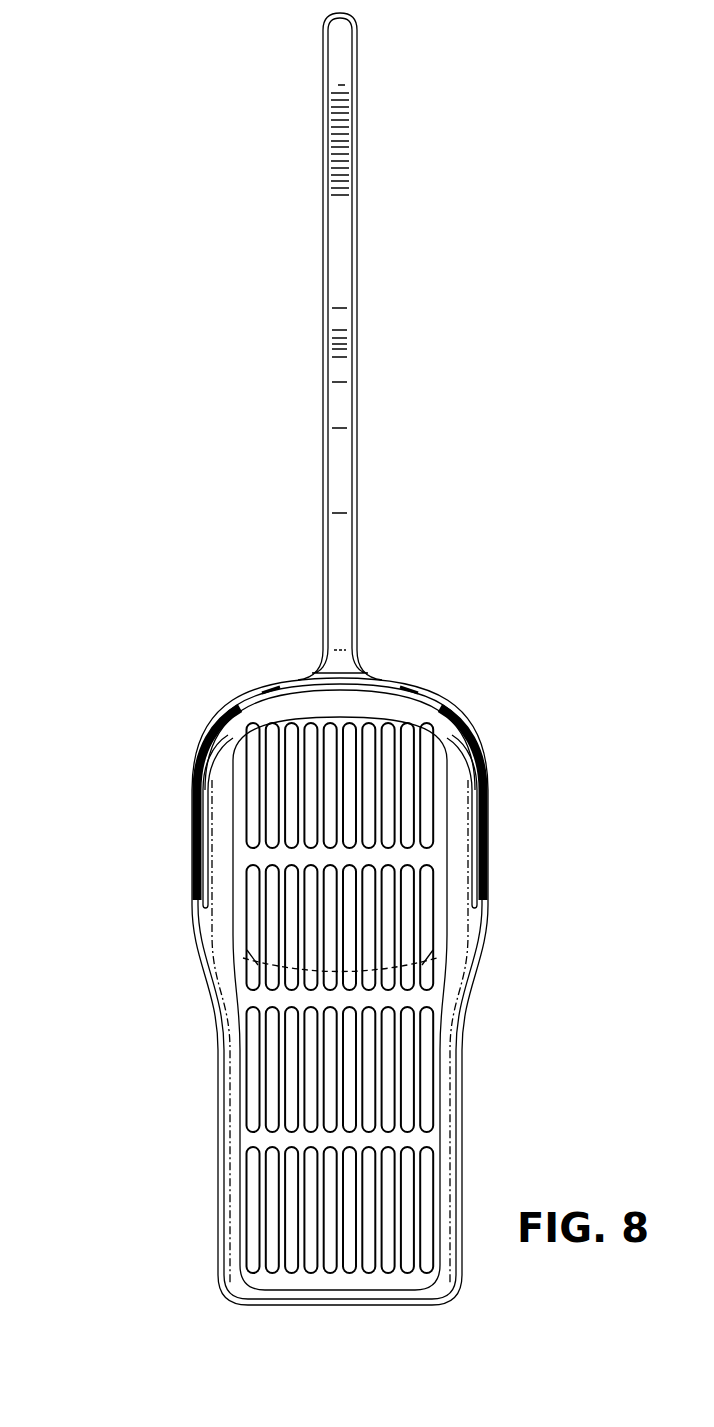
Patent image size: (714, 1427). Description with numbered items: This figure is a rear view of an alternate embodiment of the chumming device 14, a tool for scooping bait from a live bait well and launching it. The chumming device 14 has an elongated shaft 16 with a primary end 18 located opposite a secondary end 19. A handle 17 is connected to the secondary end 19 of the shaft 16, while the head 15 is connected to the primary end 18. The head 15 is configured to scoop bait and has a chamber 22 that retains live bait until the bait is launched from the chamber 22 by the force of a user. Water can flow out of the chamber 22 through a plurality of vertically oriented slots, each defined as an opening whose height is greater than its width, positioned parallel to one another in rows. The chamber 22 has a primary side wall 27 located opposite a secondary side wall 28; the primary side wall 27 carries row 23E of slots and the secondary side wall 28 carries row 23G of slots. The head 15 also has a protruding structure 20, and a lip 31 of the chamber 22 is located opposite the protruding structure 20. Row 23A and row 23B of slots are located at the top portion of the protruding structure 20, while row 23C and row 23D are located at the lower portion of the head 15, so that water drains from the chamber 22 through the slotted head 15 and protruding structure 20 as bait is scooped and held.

The chumming device 14 is at (146, 603).
The head 15 is at (195, 930).
The shaft 16 is at (323, 310).
The handle 17 is at (330, 118).
The primary end 18 is at (323, 648).
The secondary end 19 is at (323, 70).
The protruding structure 20 is at (233, 1200).
The chamber 22 is at (446, 872).
The row of vertically oriented slots 23A is at (427, 1182).
The row of vertically oriented slots 23B is at (428, 1057).
The row of vertically oriented slots 23C is at (430, 945).
The row of vertically oriented slots 23D is at (430, 779).
The row of vertically oriented slots 23E is at (205, 858).
The row of vertically oriented slots 23G is at (490, 852).
The primary side wall 27 is at (193, 830).
The secondary side wall 28 is at (489, 820).
The lip 31 is at (245, 972).